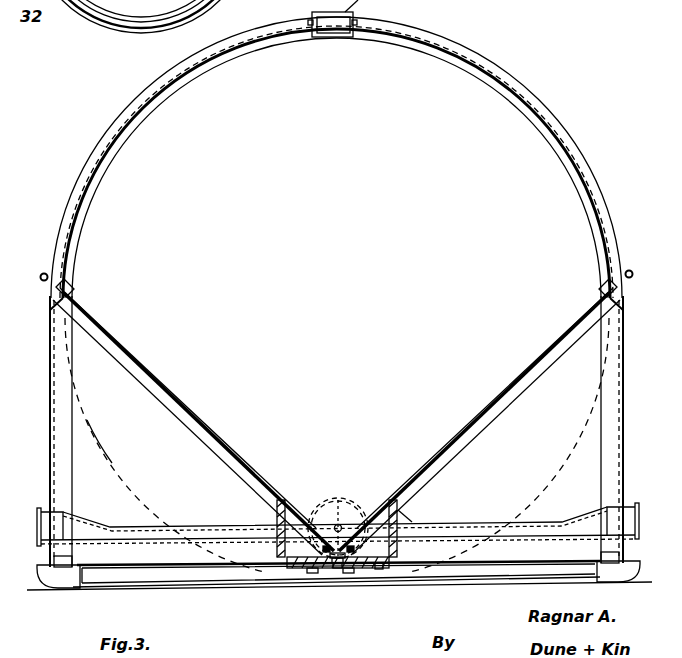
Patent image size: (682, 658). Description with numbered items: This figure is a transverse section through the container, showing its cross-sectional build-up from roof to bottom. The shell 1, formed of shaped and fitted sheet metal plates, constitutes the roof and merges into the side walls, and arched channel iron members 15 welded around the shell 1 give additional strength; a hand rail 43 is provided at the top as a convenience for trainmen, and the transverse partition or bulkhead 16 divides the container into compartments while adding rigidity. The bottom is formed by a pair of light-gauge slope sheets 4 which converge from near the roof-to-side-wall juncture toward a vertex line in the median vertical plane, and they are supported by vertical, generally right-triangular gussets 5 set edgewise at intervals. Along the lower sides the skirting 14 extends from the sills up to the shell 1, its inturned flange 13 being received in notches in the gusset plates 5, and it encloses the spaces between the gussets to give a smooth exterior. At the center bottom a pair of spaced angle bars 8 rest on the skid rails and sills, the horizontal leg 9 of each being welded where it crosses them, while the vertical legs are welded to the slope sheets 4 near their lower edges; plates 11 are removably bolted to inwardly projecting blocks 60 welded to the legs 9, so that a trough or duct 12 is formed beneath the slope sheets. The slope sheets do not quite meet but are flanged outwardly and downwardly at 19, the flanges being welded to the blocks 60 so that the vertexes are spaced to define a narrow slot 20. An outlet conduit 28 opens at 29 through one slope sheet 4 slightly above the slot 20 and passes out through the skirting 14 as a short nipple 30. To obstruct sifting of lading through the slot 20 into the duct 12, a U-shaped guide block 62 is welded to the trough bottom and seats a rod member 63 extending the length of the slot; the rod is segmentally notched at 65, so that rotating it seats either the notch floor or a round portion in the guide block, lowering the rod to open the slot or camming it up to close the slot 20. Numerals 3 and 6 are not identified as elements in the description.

The shell 1 is at (513, 93).
The arched channel iron member 15 is at (562, 133).
The partition or bulkhead 16 is at (585, 225).
The hand rail 43 is at (44, 281).
The skirting 14 is at (50, 375).
The slope sheet 4 is at (220, 452).
The gusset 5 is at (170, 428).
The outlet conduit 28 is at (210, 528).
The nipple 30 is at (52, 520).
The inturned flange 13 is at (72, 556).
The angle bar 8 is at (274, 545).
The rod member 63 is at (330, 498).
The slot 20 is at (340, 524).
The outlet conduit opening 29 is at (325, 517).
The flange 19 is at (412, 517).
The block 60 is at (287, 559).
The horizontal leg 9 is at (290, 563).
The trough or duct 12 is at (328, 567).
The notch 65 is at (334, 566).
The guide block 62 is at (345, 568).
The plate 11 is at (380, 569).
The base runner 3 is at (223, 569).
The foot skid 6 is at (66, 580).